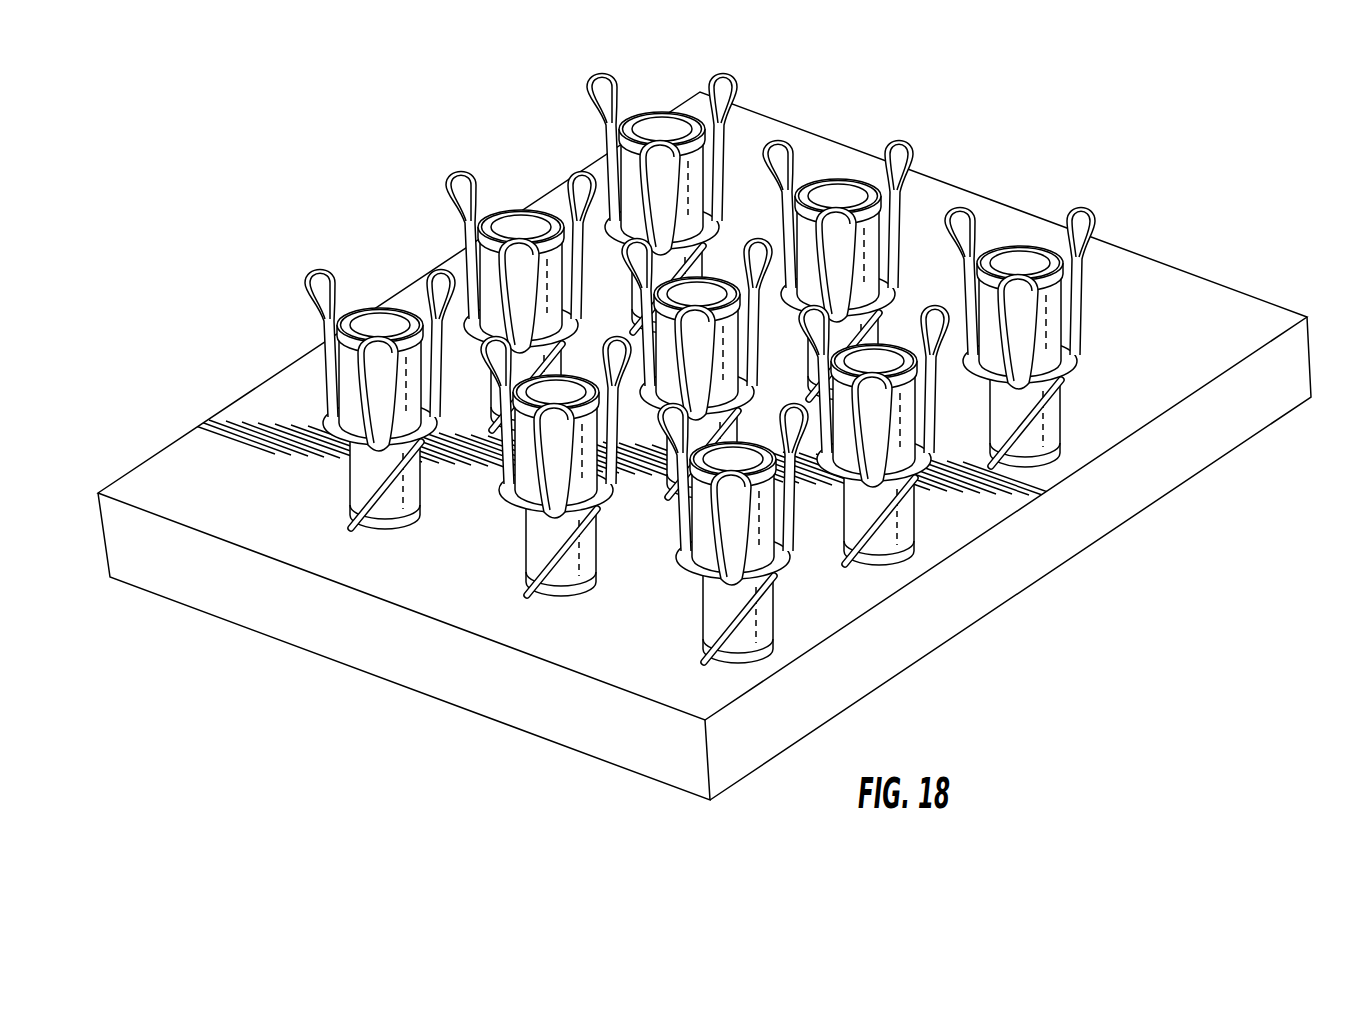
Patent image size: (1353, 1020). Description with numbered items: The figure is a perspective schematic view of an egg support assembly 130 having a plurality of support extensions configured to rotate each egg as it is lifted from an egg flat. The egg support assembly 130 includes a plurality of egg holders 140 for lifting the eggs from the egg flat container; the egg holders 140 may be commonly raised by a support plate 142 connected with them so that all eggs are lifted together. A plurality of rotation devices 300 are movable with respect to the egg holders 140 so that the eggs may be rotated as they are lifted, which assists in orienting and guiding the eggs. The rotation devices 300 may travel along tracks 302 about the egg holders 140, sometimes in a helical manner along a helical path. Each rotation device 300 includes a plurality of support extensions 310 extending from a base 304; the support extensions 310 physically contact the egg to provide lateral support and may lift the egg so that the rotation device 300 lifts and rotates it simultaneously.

The egg support assembly 130 is at (692, 446).
The egg holder 140 is at (320, 502).
The support plate 142 is at (610, 660).
The rotation device 300 is at (1093, 329).
The track 302 is at (843, 629).
The base 304 is at (1102, 437).
The support extension 310 is at (1020, 239).